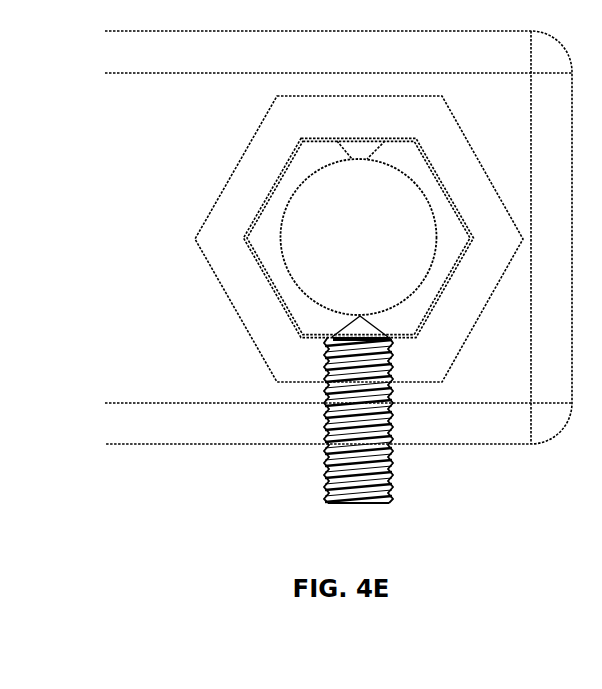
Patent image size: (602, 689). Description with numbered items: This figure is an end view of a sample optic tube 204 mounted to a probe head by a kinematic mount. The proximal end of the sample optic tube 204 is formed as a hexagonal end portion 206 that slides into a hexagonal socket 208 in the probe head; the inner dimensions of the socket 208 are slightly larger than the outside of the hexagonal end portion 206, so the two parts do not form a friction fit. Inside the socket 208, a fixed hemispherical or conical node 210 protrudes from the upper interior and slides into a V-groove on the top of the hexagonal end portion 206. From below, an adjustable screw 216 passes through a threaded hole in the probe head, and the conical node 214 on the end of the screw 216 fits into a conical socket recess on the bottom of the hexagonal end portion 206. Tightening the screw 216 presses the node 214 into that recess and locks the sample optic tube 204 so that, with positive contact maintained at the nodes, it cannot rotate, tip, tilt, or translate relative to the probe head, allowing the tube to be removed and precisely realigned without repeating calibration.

The sample optic tube 204 is at (433, 205).
The hexagonal end portion 206 is at (412, 167).
The hexagonal socket 208 is at (234, 178).
The fixed hemispherical or conical node 210 is at (360, 148).
The hemispherical or conical node 214 is at (359, 318).
The adjustable screw 216 is at (393, 453).